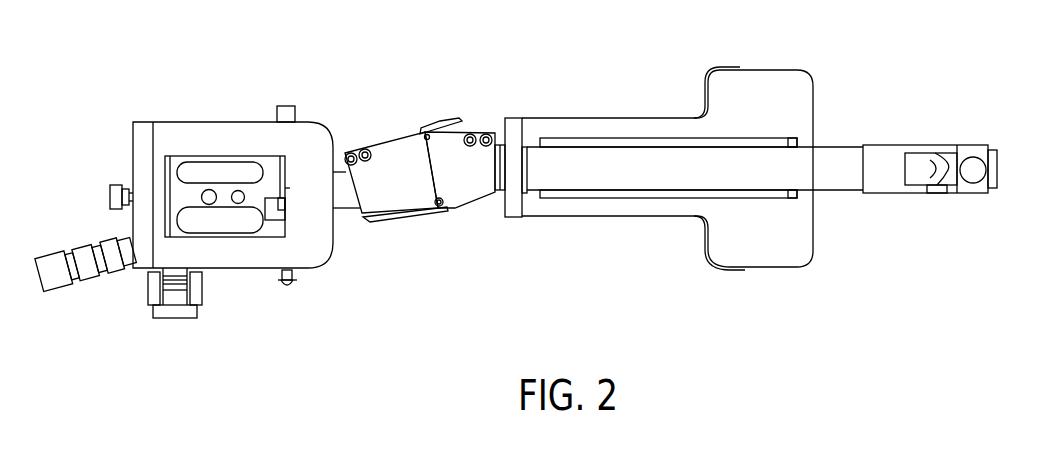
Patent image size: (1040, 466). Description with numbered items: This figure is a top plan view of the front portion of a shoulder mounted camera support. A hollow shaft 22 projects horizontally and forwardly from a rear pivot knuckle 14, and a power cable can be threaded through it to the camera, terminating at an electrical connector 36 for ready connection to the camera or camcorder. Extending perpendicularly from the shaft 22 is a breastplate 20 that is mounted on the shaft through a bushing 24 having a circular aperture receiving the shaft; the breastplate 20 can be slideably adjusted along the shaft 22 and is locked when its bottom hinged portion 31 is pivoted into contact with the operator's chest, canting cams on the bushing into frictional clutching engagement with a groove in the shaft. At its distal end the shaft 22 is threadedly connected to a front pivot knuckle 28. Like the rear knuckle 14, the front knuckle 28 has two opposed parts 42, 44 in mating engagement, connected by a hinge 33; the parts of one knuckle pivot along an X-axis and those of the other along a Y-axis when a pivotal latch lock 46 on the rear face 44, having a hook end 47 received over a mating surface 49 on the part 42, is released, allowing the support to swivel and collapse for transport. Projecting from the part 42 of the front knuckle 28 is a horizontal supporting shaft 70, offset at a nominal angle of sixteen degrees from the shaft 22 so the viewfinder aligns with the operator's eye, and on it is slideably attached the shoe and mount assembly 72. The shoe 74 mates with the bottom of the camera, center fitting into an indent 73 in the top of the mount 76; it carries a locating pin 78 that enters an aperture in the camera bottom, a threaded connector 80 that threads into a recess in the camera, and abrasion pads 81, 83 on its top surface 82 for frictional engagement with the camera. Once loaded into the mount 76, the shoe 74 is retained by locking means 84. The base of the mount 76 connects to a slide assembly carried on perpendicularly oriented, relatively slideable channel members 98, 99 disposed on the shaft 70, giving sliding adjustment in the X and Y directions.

The shoe and mount assembly 72 is at (145, 118).
The indent 73 is at (238, 135).
The shoe 74 is at (270, 165).
The locking means 84 is at (283, 168).
The abrasion pad 81 is at (187, 170).
The abrasion pad 83 is at (190, 223).
The threaded connector 80 is at (210, 190).
The locating pin 78 is at (238, 204).
The top surface of the shoe 82 is at (287, 188).
The mount 76 is at (302, 243).
The electrical connector 36 is at (70, 254).
The channel member 99 is at (147, 285).
The channel member 98 is at (173, 318).
The horizontal supporting shaft 70 is at (345, 204).
The knuckle part 42 is at (378, 148).
The front pivot knuckle 28 is at (388, 235).
The knuckle part 44 is at (465, 196).
The hinge 33 is at (427, 134).
The pivotal latch lock 46 is at (451, 118).
The bushing 24 is at (513, 217).
The bottom hinged portion 31 is at (714, 216).
The breastplate 20 is at (770, 274).
The hollow shaft 22 is at (833, 187).
The rear pivot knuckle 14 is at (937, 188).
The mating surface 49 is at (940, 165).
The hook end 47 is at (1003, 160).